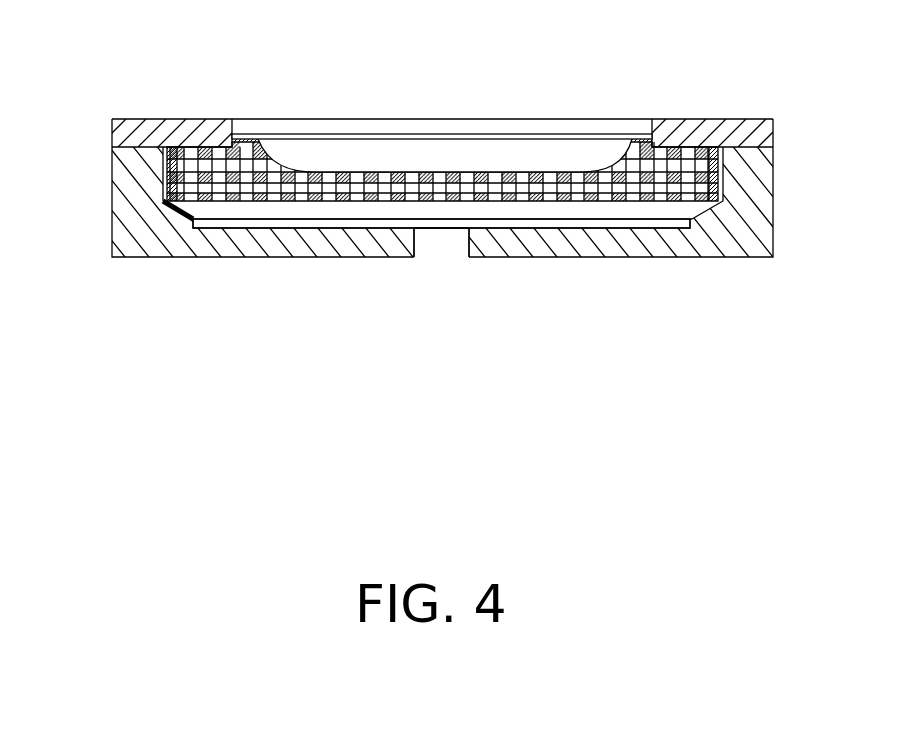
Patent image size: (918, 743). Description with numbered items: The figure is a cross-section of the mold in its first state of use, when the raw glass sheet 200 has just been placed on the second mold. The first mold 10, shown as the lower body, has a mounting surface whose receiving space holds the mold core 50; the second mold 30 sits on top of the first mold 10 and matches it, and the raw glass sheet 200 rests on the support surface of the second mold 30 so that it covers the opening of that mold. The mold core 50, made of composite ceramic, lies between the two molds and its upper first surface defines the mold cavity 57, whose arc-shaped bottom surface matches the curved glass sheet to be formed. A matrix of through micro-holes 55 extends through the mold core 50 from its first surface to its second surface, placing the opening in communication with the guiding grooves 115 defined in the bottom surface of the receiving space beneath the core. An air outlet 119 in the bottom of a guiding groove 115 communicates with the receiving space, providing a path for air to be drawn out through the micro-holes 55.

The first mold 10 is at (135, 222).
The second mold 30 is at (138, 125).
The mold core 50 is at (385, 134).
The micro-holes 55 is at (193, 152).
The mold cavity 57 is at (358, 153).
The guiding grooves 115 is at (257, 222).
The air outlet 119 is at (445, 242).
The raw glass sheet 200 is at (555, 135).